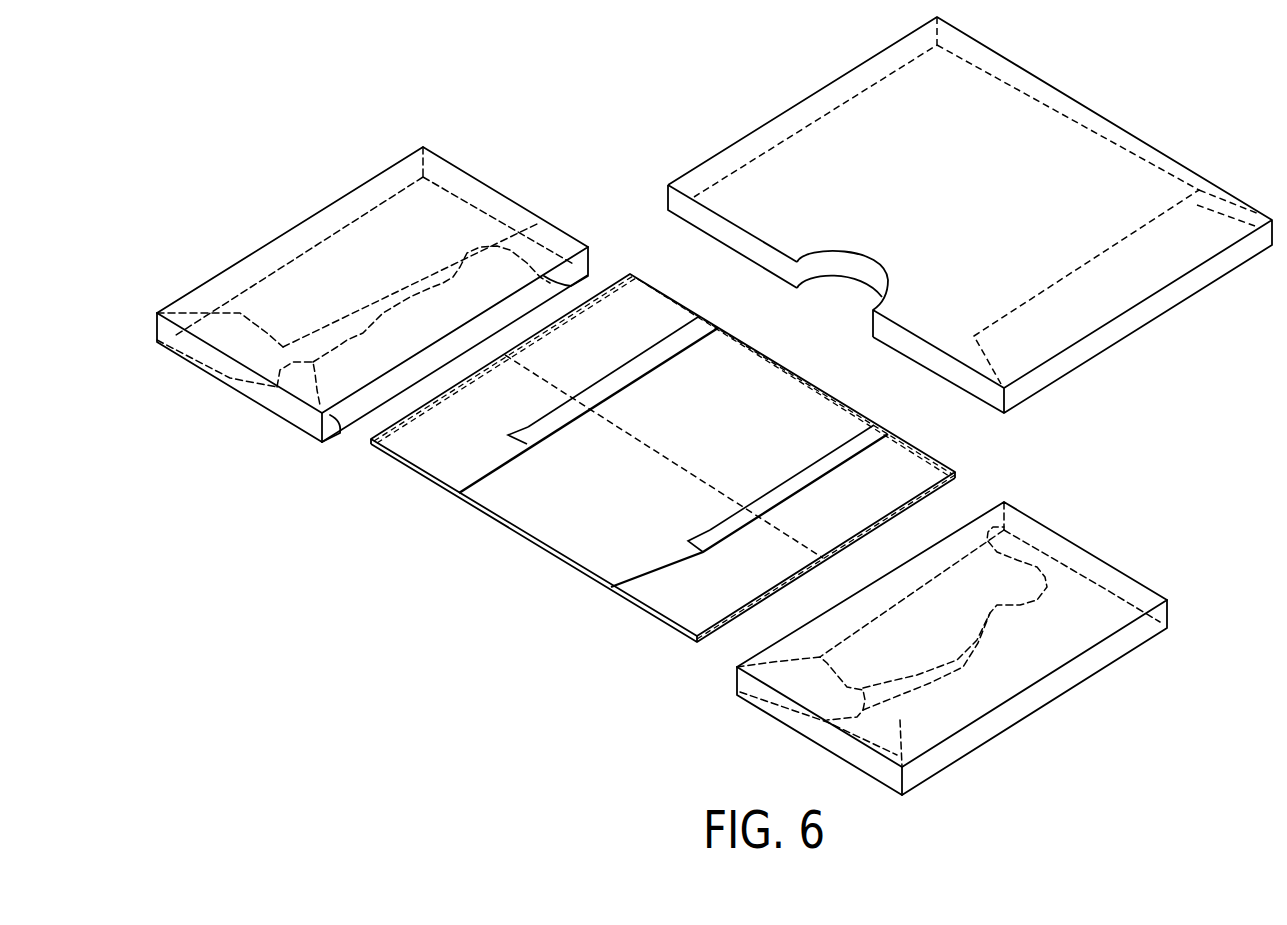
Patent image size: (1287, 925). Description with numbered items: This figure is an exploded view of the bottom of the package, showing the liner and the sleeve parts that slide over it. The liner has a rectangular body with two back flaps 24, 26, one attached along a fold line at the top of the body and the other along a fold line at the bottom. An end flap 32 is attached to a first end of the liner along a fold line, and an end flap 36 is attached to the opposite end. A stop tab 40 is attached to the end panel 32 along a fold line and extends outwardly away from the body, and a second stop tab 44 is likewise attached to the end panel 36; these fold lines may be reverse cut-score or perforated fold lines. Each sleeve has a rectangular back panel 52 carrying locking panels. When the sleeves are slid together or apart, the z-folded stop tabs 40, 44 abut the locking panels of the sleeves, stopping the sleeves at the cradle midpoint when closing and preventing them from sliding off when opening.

The back flap 24 is at (749, 421).
The back flap 26 is at (601, 506).
The end flap 32 is at (623, 346).
The end flap 36 is at (878, 514).
The stop tab 40 is at (520, 426).
The second stop tab 44 is at (705, 534).
The back panel 52 is at (423, 183).